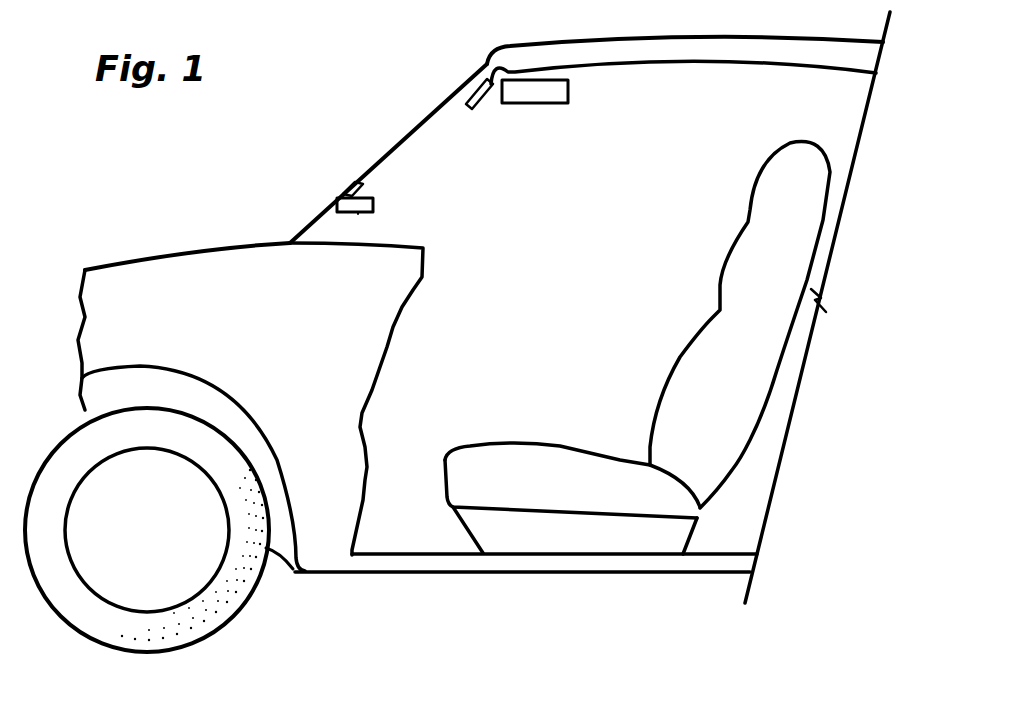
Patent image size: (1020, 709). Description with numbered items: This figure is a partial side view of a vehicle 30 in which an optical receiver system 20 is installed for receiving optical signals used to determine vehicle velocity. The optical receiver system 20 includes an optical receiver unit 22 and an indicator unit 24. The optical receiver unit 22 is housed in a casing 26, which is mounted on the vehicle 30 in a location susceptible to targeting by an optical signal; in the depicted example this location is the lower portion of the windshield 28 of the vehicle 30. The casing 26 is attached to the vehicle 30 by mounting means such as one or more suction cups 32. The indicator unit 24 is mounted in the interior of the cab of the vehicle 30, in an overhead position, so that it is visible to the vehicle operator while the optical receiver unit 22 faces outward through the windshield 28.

The optical receiver system 20 is at (540, 193).
The optical receiver unit 22 is at (423, 205).
The indicator unit 24 is at (568, 92).
The casing 26 is at (358, 214).
The windshield 28 is at (375, 157).
The vehicle 30 is at (158, 256).
The suction cup 32 is at (350, 184).